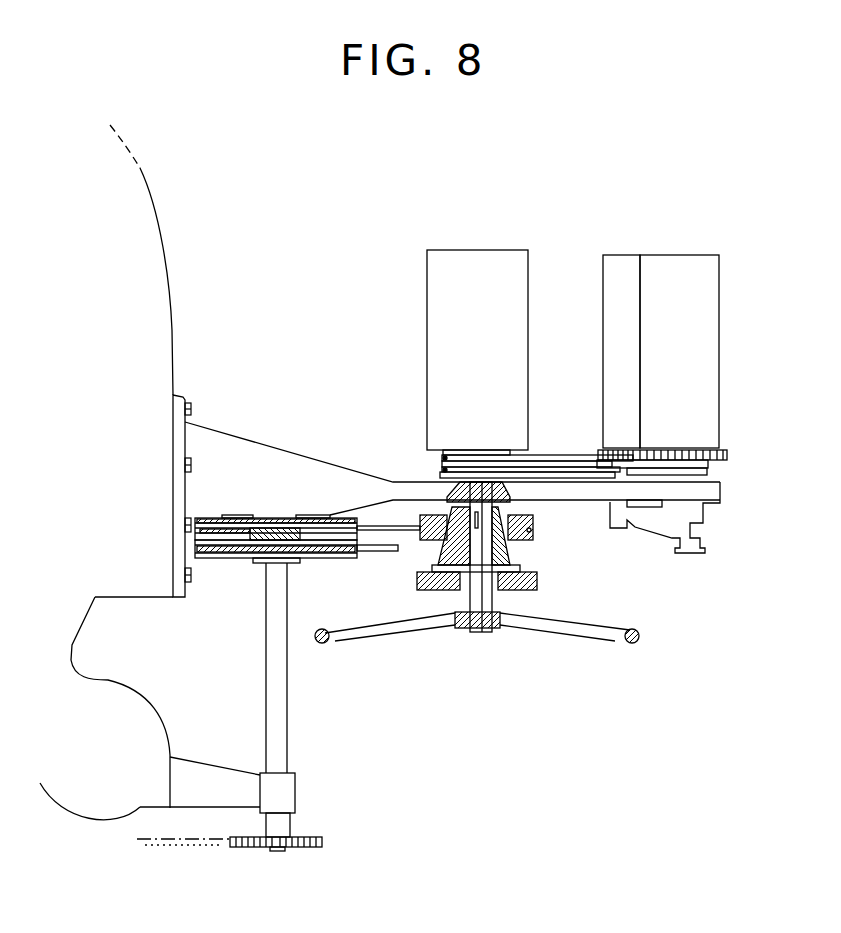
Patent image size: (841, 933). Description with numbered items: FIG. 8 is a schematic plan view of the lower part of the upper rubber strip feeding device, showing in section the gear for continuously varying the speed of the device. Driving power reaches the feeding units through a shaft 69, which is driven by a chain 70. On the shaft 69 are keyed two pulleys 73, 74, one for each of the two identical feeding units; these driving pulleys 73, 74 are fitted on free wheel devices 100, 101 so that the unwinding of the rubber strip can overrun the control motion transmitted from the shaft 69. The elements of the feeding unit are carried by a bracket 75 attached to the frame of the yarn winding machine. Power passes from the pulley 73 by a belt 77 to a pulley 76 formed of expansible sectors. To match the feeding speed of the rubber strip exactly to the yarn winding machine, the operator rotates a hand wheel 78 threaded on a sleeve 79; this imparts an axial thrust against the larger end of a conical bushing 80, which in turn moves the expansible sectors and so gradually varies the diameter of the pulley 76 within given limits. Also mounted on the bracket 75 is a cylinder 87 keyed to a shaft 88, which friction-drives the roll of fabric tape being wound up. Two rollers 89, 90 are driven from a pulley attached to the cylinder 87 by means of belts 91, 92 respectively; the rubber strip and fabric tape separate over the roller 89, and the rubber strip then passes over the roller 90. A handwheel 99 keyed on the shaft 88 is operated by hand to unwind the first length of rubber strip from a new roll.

The shaft 69 is at (278, 718).
The chain 70 is at (200, 845).
The pulley 73 is at (213, 535).
The pulley 74 is at (223, 547).
The bracket 75 is at (237, 448).
The pulley 76 is at (523, 533).
The belt 77 is at (393, 520).
The hand wheel 78 is at (530, 587).
The sleeve 79 is at (467, 603).
The conical bushing 80 is at (513, 556).
The cylinder 87 is at (472, 266).
The shaft 88 is at (481, 628).
The roller 89 is at (694, 265).
The roller 90 is at (620, 265).
The belt 91 is at (548, 455).
The belt 92 is at (585, 470).
The handwheel 99 is at (640, 643).
The free wheel device 100 is at (280, 520).
The free wheel device 101 is at (290, 565).